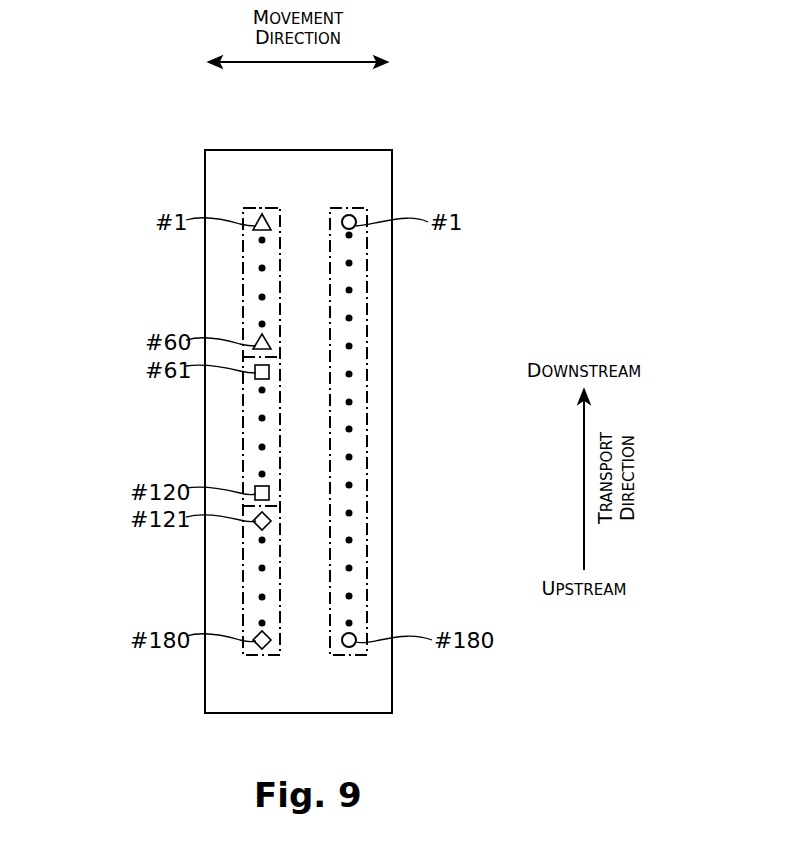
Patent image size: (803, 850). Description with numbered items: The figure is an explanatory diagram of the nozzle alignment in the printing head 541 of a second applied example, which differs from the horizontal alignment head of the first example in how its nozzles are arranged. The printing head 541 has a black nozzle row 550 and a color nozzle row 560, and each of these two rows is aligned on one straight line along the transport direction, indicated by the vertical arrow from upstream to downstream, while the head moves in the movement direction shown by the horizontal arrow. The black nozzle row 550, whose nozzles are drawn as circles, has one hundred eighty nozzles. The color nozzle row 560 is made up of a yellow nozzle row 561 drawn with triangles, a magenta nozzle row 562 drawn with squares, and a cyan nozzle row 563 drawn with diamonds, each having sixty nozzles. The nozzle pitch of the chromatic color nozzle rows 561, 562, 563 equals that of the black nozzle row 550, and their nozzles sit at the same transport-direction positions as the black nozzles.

The printing head 541 is at (304, 149).
The black nozzle row 550 is at (368, 428).
The color nozzle row 560 is at (72, 232).
The yellow nozzle row 561 is at (242, 281).
The magenta nozzle row 562 is at (242, 434).
The cyan nozzle row 563 is at (242, 584).